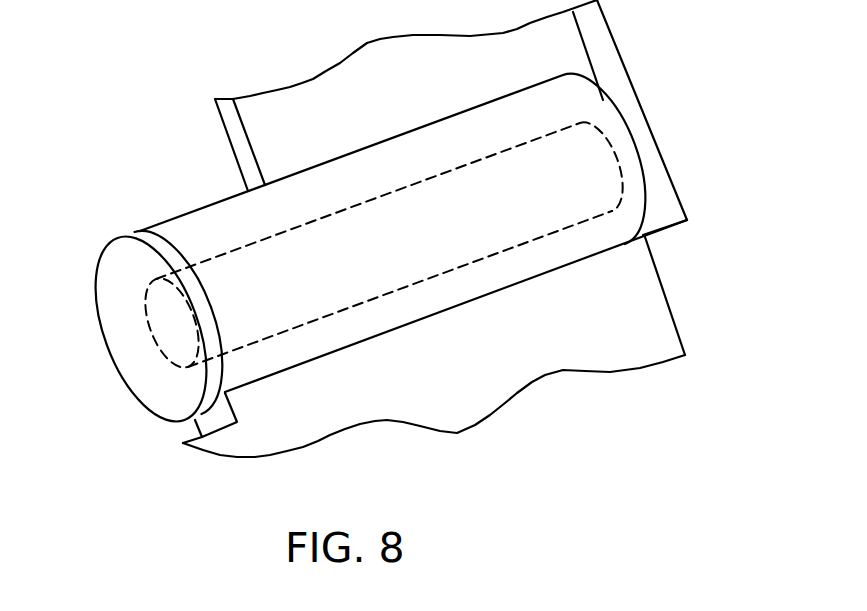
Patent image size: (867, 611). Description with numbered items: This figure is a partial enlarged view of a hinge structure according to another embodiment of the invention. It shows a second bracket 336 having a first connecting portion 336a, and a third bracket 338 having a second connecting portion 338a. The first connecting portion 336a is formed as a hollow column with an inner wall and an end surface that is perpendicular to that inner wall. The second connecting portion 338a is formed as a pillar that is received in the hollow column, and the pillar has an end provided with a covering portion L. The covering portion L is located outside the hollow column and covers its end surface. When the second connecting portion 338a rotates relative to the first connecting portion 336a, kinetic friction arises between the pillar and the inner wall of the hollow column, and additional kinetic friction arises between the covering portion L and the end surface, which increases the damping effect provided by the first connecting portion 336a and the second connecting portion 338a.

The covering portion L is at (115, 262).
The second bracket 336 is at (622, 348).
The first connecting portion 336a is at (487, 312).
The third bracket 338 is at (436, 72).
The second connecting portion 338a is at (97, 360).